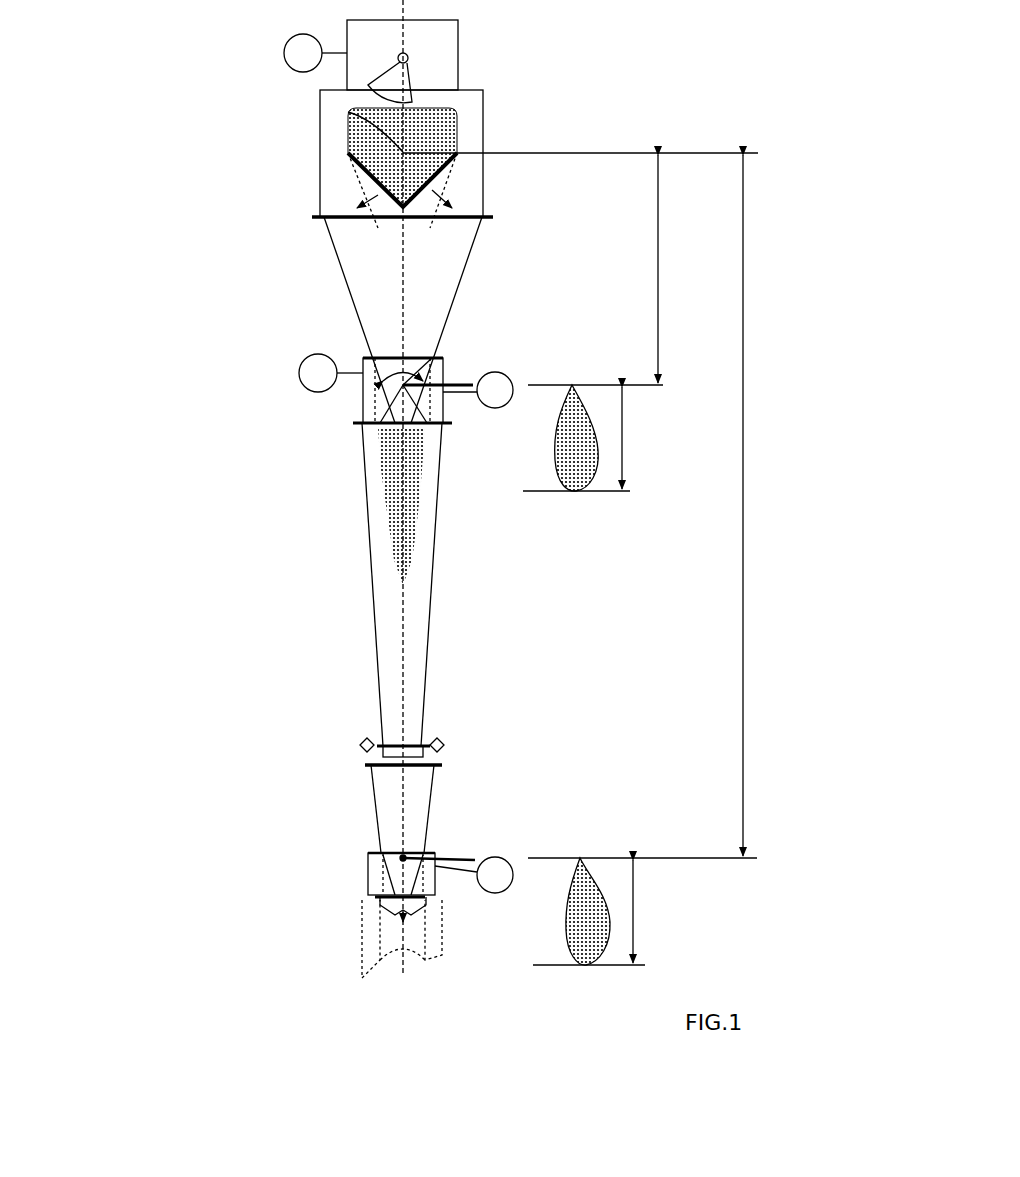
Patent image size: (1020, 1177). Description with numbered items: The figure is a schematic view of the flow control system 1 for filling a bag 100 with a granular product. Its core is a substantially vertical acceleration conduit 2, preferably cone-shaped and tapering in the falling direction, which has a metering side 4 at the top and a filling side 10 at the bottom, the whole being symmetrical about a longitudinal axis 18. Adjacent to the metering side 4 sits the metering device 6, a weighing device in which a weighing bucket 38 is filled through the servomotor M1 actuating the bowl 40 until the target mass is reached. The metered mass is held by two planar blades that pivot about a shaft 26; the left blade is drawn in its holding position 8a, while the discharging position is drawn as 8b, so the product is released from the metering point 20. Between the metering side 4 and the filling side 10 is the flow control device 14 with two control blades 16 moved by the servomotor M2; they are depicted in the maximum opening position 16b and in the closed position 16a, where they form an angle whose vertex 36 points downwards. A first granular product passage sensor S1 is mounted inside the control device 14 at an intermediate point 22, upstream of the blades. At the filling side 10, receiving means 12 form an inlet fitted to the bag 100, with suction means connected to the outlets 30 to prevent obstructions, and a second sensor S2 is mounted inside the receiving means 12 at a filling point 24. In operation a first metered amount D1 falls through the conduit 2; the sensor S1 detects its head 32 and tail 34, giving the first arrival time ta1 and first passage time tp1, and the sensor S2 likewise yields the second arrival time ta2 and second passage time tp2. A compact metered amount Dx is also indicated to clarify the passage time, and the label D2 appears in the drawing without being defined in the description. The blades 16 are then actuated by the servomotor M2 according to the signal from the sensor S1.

The flow control system 1 is at (290, 330).
The acceleration conduit 2 is at (445, 587).
The metering side 4 is at (345, 226).
The metering device 6 is at (500, 118).
The left blade in holding position 8a is at (452, 178).
The blade in discharging position 8b is at (450, 170).
The filling side 10 is at (378, 885).
The receiving means 12 is at (380, 900).
The flow control device 14 is at (363, 382).
The control blades 16 is at (392, 398).
The control blades in closed position 16a is at (385, 425).
The control blades in maximum opening position 16b is at (375, 400).
The longitudinal axis 18 is at (405, 9).
The metering point 20 is at (347, 115).
The intermediate point 22 is at (375, 418).
The filling point 24 is at (403, 858).
The shaft 26 is at (348, 153).
The outlets 30 is at (363, 748).
The head 32 is at (400, 590).
The tail 34 is at (400, 432).
The vertex 36 is at (413, 427).
The weighing bucket 38 is at (455, 135).
The bowl 40 is at (412, 82).
The bag 100 is at (435, 945).
The servomotor M1 is at (315, 53).
The servomotor M2 is at (331, 373).
The first granular product passage sensor S1 is at (478, 390).
The second granular product passage sensor S2 is at (458, 875).
The first metered amount D1 is at (387, 525).
The second beam diameter D2 is at (373, 143).
The compact metered amount Dx is at (566, 428).
The first arrival time ta1 is at (611, 270).
The second arrival time ta2 is at (759, 505).
The first passage time tp1 is at (586, 439).
The second passage time tp2 is at (642, 911).